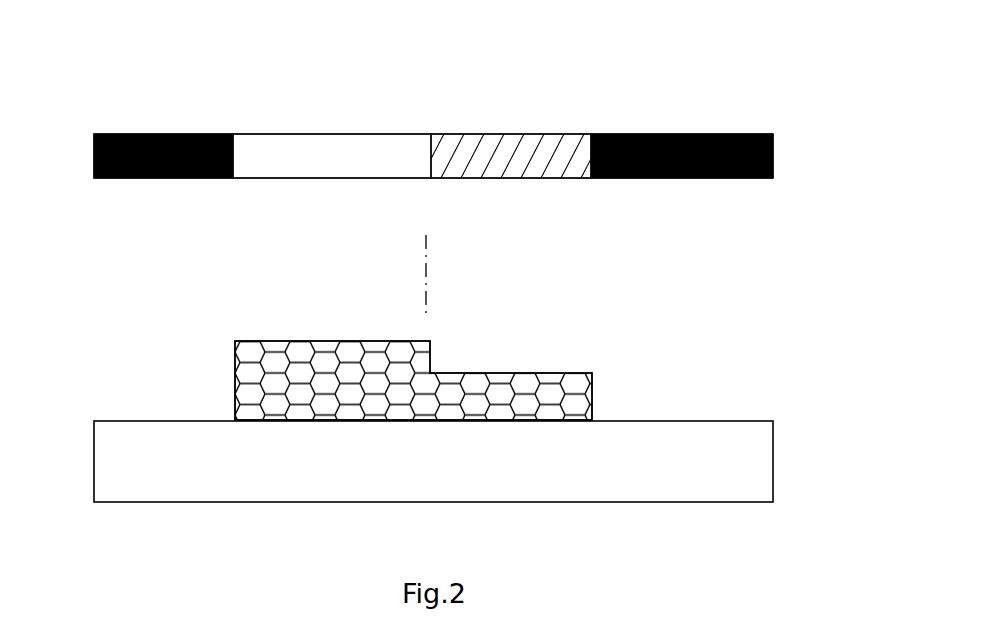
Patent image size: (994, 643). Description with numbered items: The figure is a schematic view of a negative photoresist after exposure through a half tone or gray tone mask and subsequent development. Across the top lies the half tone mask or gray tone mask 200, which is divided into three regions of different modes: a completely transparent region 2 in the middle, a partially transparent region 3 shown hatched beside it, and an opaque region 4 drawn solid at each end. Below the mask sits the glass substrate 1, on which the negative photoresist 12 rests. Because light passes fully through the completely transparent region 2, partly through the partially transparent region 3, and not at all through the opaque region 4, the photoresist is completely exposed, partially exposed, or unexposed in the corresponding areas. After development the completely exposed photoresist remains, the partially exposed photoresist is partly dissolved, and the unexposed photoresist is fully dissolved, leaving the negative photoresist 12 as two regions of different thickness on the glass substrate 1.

The half tone mask or gray tone mask 200 is at (88, 121).
The opaque region 4 is at (159, 178).
The completely transparent region 2 is at (347, 178).
The partially transparent region 3 is at (507, 178).
The negative photoresist 12 is at (497, 378).
The glass substrate 1 is at (624, 457).